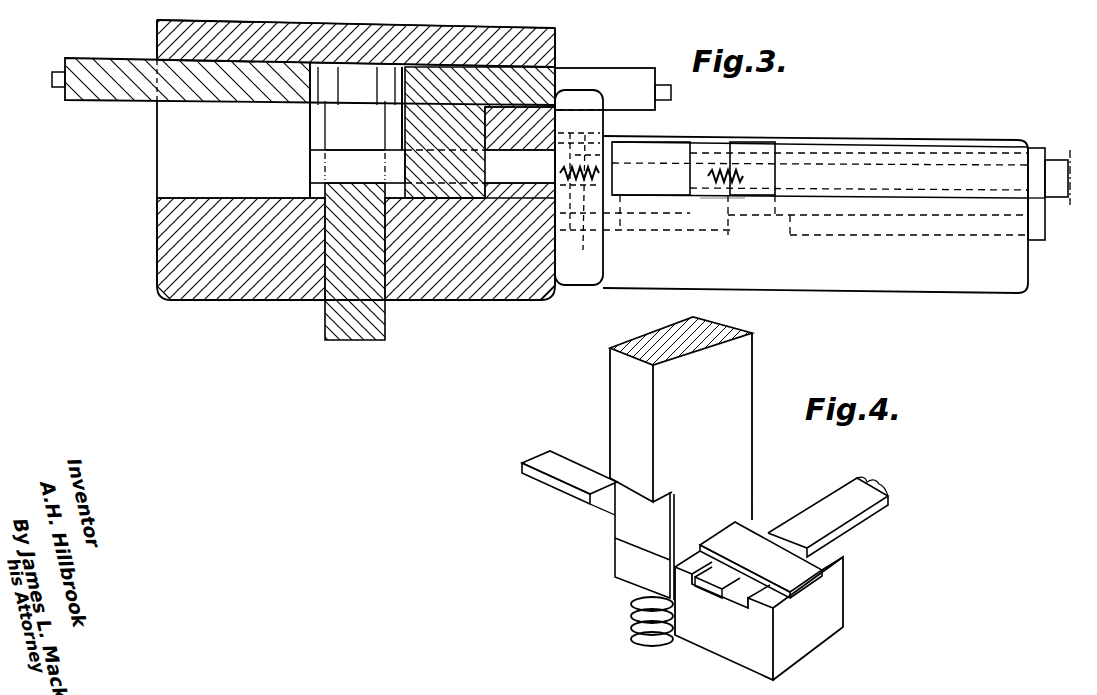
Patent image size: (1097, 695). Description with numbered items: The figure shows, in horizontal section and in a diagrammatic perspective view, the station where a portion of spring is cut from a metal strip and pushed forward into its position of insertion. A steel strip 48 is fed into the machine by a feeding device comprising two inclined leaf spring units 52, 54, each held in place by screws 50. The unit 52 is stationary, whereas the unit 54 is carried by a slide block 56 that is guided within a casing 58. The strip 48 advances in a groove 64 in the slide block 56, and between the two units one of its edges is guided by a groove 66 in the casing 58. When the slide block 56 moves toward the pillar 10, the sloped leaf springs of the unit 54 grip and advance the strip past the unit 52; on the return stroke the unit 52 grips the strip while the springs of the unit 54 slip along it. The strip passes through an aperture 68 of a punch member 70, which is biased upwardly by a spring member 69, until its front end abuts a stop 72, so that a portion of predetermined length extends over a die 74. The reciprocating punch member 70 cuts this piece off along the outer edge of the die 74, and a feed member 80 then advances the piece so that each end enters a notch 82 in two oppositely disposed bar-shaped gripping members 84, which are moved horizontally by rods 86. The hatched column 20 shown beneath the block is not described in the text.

In FIG. 3, the pillar 10 is at (548, 39).
In FIG. 3, the column / stem 20 is at (380, 313).
In FIG. 3, the steel strip 48 is at (342, 165).
In FIG. 4, the steel strip 48 is at (582, 485).
In FIG. 3, the screws 50 is at (722, 186).
In FIG. 3, the leaf spring unit 52 is at (608, 144).
In FIG. 3, the leaf spring unit 54 is at (768, 149).
In FIG. 3, the slide block 56 is at (1062, 169).
In FIG. 3, the casing 58 is at (1016, 272).
In FIG. 3, the groove 64 is at (700, 197).
In FIG. 3, the groove 66 is at (711, 152).
In FIG. 4, the aperture 68 is at (740, 527).
In FIG. 4, the spring member 69 is at (630, 615).
In FIG. 3, the punch member 70 is at (447, 103).
In FIG. 4, the punch member 70 is at (735, 466).
In FIG. 3, the stop 72 is at (312, 163).
In FIG. 3, the die 74 is at (310, 127).
In FIG. 4, the die 74 is at (822, 628).
In FIG. 4, the feed member 80 is at (866, 516).
In FIG. 3, the notch 82 is at (398, 68).
In FIG. 3, the gripping members 84 is at (115, 68).
In FIG. 3, the rods 86 is at (58, 72).